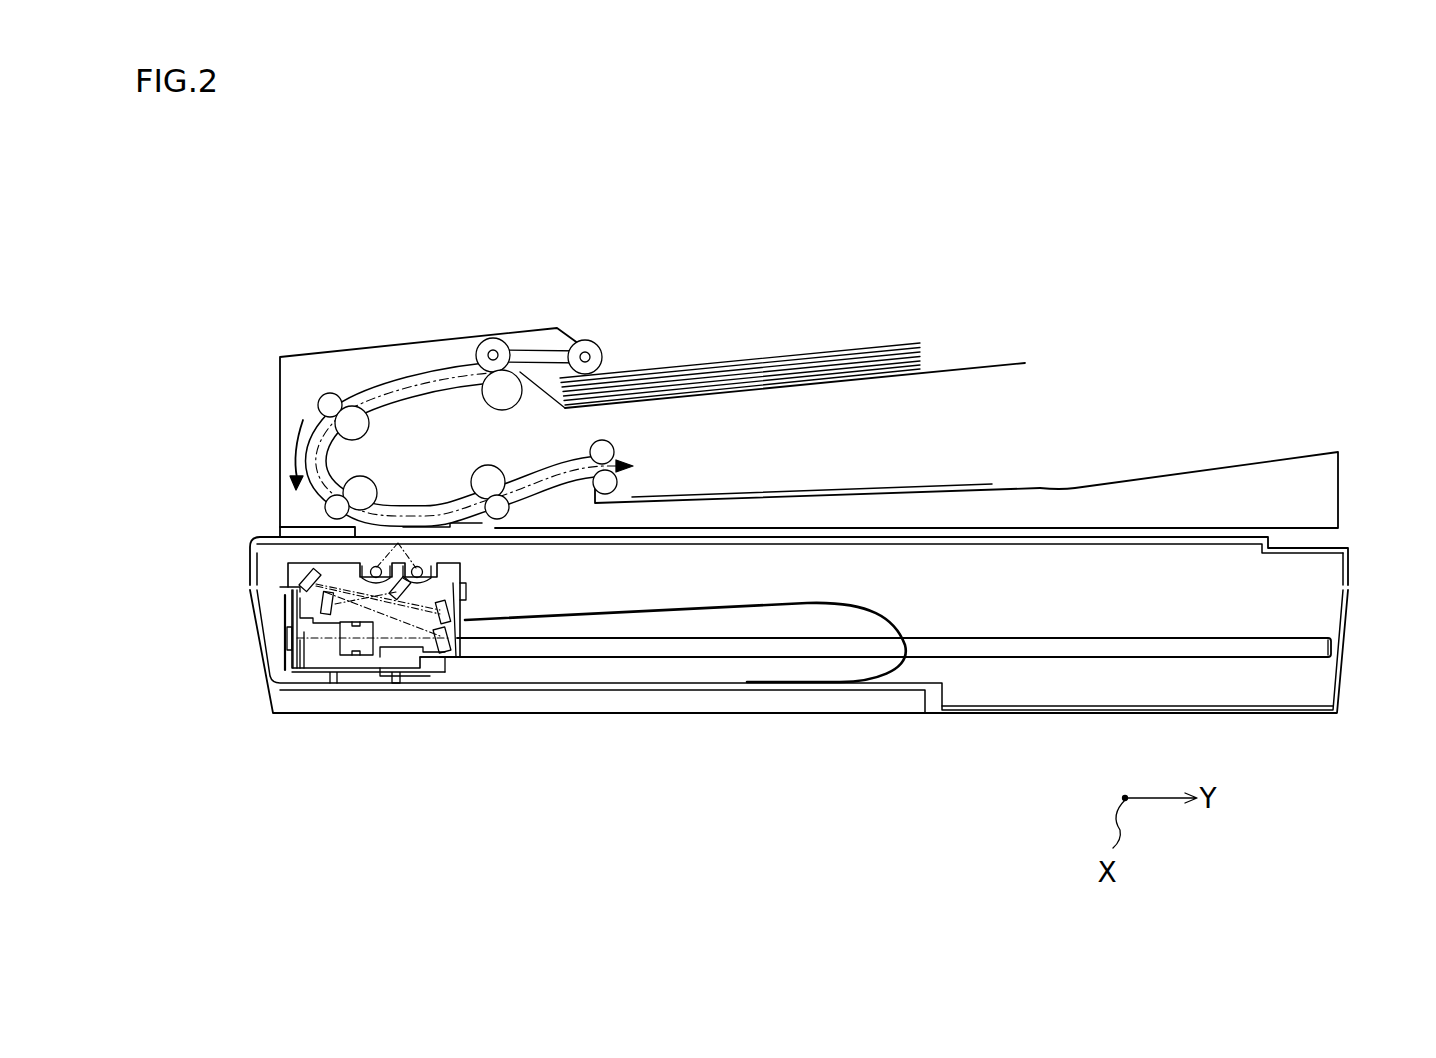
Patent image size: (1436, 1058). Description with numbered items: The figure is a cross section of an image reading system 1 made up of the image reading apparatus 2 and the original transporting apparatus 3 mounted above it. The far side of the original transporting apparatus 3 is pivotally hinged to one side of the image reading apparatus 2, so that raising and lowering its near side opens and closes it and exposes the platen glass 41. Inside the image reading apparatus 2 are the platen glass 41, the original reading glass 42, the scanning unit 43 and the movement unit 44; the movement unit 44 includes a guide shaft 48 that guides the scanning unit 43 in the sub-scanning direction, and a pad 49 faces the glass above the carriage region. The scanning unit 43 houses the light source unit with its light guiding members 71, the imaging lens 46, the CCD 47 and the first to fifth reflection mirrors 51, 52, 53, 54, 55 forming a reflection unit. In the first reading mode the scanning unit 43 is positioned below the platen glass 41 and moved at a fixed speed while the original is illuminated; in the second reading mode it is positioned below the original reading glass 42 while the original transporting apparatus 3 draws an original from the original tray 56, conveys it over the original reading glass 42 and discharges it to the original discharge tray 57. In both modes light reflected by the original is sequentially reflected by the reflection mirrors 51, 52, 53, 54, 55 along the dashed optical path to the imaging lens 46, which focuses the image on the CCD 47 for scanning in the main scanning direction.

The image reading apparatus 1 is at (761, 218).
The image reading apparatus 2 is at (1356, 647).
The original transporting apparatus 3 is at (1352, 490).
The platen glass 41 is at (1108, 536).
The original reading glass 42 is at (398, 543).
The scanning unit 43 is at (283, 577).
The movement unit 44 is at (1258, 676).
The imaging lens 46 is at (350, 655).
The CCD 47 is at (292, 645).
The guide shaft 48 is at (1043, 645).
The pad 49 is at (867, 610).
The first reflection mirror 51 is at (462, 588).
The second reflection mirror 52 is at (321, 605).
The third reflection mirror 53 is at (455, 655).
The fourth reflection mirror 54 is at (306, 570).
The fifth reflection mirror 55 is at (432, 660).
The original tray 56 is at (972, 368).
The original discharge tray 57 is at (1020, 488).
The light guiding member 71 is at (372, 566).